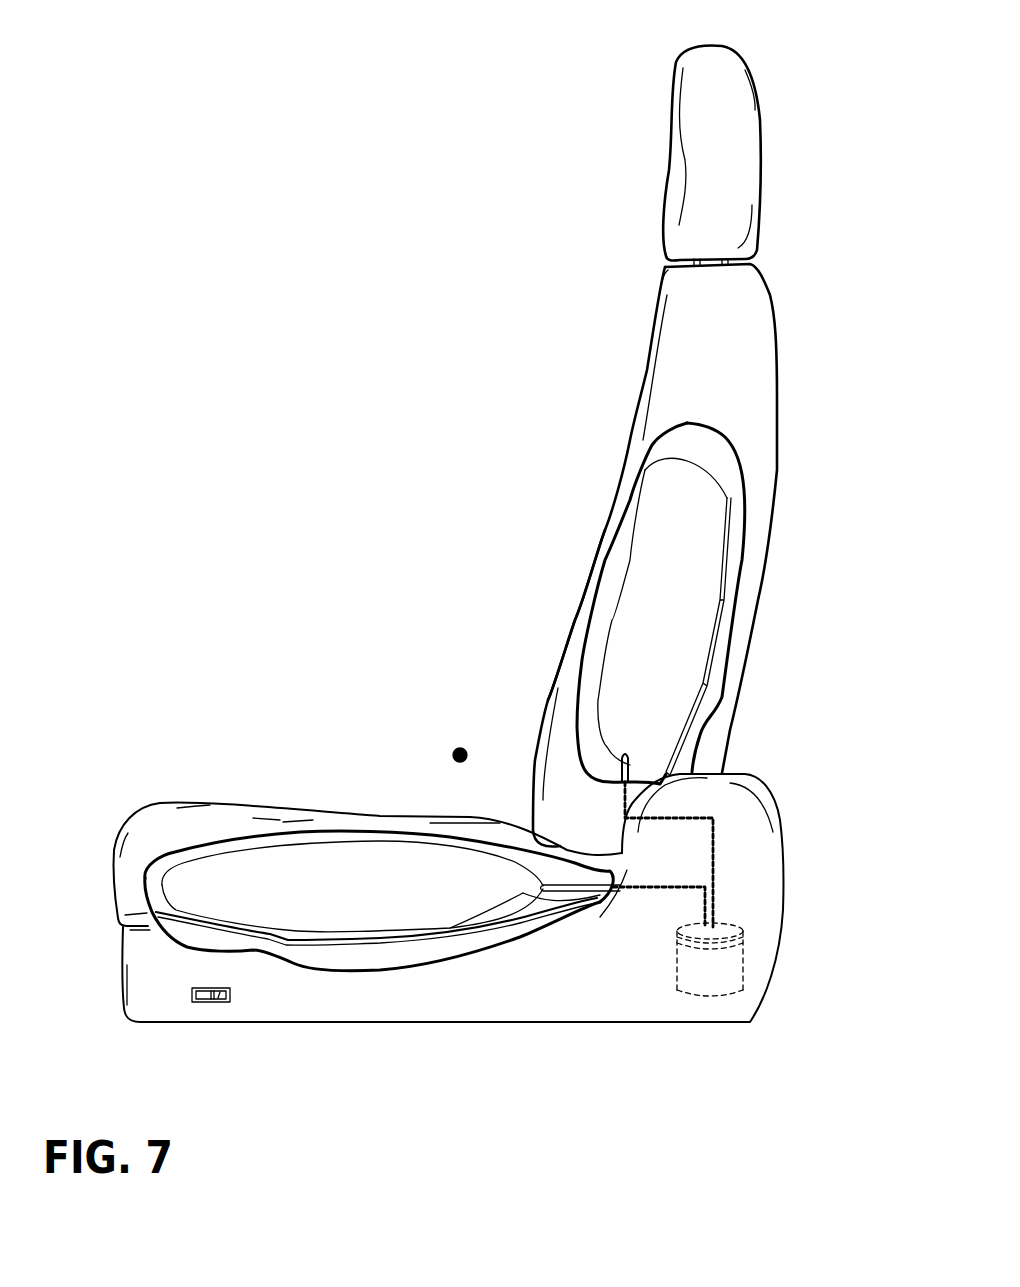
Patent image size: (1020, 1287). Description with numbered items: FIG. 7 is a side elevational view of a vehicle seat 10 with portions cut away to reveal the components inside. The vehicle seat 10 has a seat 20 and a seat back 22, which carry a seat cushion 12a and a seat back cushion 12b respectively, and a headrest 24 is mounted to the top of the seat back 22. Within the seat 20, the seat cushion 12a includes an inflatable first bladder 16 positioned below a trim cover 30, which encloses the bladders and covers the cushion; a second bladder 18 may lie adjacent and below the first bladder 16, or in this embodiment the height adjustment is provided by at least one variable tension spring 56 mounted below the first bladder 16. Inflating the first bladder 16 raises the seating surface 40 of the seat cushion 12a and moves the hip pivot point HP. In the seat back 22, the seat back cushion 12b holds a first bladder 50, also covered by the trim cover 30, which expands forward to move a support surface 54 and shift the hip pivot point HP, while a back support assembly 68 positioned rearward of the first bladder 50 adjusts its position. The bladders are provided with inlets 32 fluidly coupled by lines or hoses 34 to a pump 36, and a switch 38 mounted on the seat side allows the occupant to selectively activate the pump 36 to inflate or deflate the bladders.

The vehicle seat 10 is at (370, 171).
The seat cushion 12a is at (162, 803).
The seat back cushion 12b is at (550, 690).
The first bladder 16 is at (303, 857).
The second bladder 18 is at (383, 915).
The seat 20 is at (112, 927).
The seat back 22 is at (780, 347).
The headrest 24 is at (762, 150).
The trim cover 30 is at (748, 517).
The inlets 32 is at (630, 755).
The lines or hoses 34 is at (713, 838).
The pump 36 is at (713, 967).
The switch 38 is at (216, 1005).
The seating surface 40 is at (360, 817).
The first bladder 50 is at (660, 545).
The support surface 54 is at (570, 620).
The variable tension spring 56 is at (460, 940).
The back support assembly 68 is at (728, 560).
The hip pivot point HP is at (455, 738).